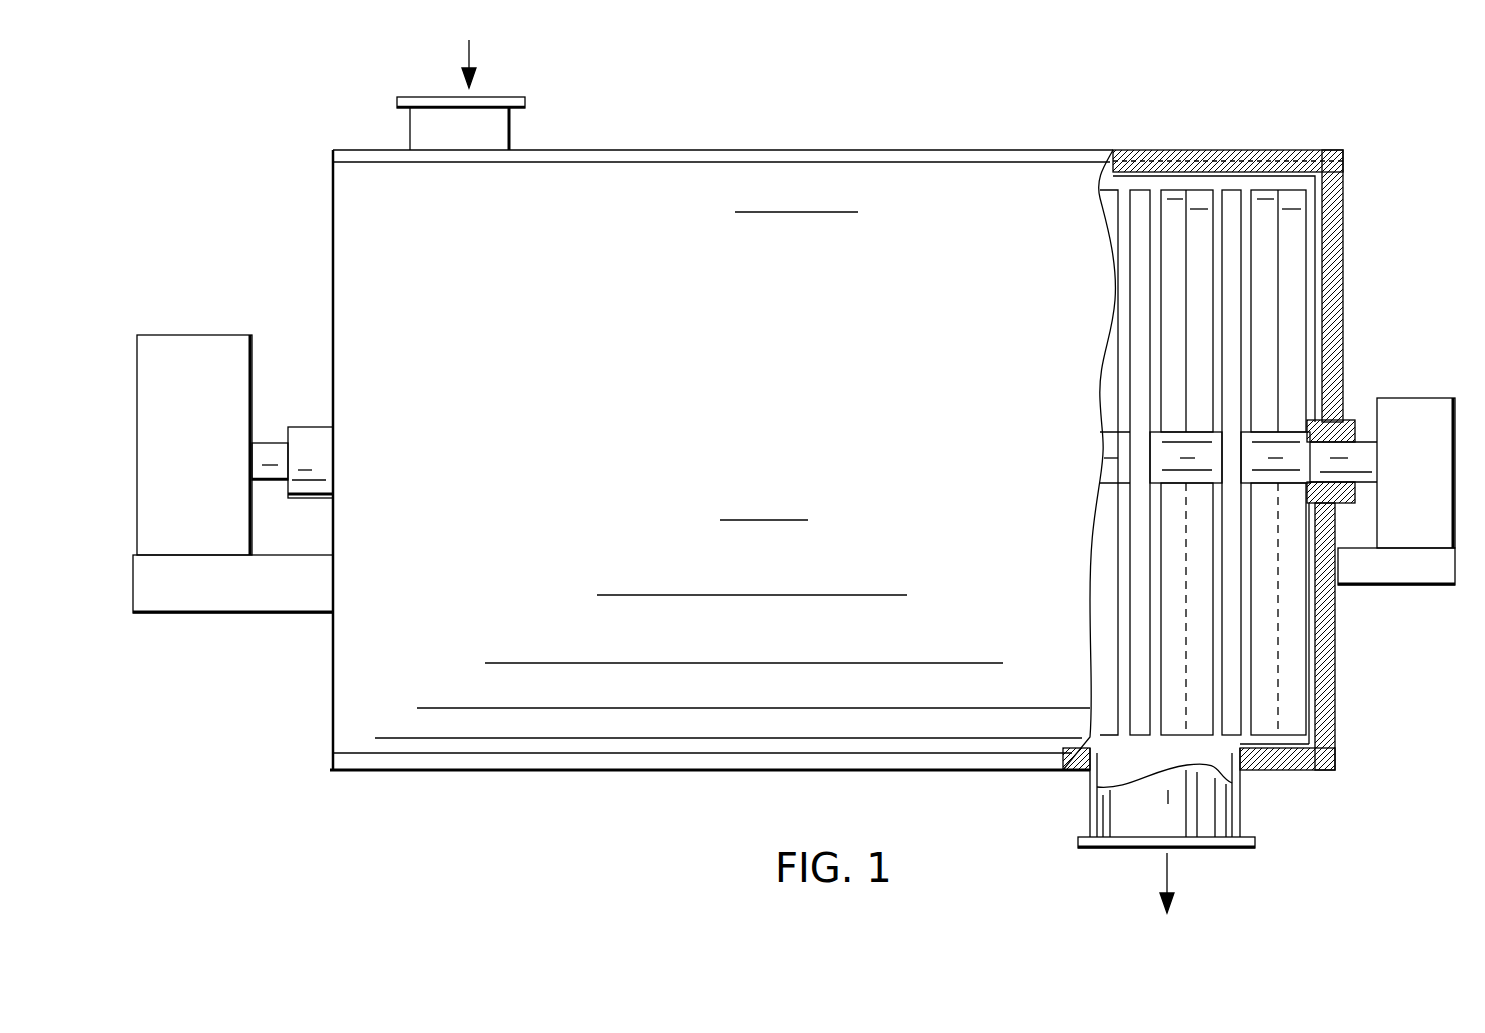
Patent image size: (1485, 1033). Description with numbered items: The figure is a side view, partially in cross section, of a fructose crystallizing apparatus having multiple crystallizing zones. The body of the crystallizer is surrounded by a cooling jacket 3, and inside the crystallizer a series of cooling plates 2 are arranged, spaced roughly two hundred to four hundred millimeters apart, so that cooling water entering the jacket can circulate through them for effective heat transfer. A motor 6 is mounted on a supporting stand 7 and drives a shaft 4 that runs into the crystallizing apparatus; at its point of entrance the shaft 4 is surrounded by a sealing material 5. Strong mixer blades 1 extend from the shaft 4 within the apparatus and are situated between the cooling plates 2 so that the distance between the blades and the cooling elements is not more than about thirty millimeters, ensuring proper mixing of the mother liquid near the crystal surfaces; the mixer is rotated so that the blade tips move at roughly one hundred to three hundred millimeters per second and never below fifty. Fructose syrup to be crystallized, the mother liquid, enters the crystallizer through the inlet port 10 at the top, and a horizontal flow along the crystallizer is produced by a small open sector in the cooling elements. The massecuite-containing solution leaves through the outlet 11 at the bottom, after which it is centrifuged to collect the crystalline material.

The mixer blades 1 is at (1310, 217).
The cooling plates 2 is at (1240, 190).
The cooling jacket 3 is at (935, 150).
The shaft 4 is at (1368, 442).
The sealing material 5 is at (1350, 503).
The motor 6 is at (1418, 410).
The supporting stand 7 is at (1427, 580).
The inlet port 10 is at (512, 127).
The outlet 11 is at (1240, 807).